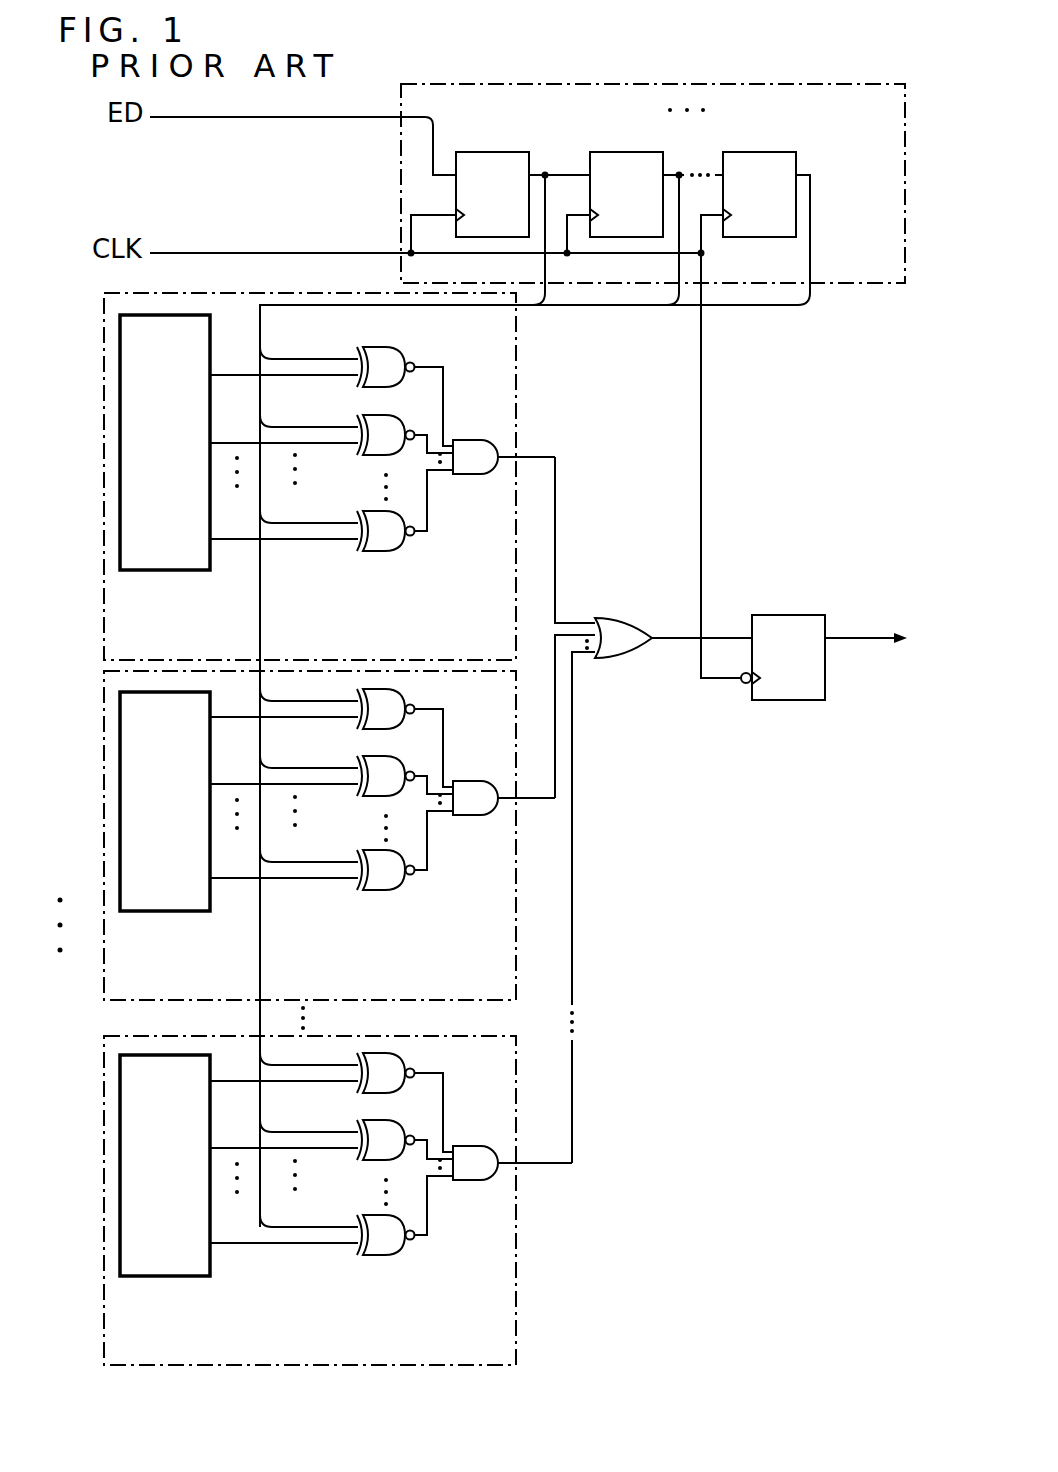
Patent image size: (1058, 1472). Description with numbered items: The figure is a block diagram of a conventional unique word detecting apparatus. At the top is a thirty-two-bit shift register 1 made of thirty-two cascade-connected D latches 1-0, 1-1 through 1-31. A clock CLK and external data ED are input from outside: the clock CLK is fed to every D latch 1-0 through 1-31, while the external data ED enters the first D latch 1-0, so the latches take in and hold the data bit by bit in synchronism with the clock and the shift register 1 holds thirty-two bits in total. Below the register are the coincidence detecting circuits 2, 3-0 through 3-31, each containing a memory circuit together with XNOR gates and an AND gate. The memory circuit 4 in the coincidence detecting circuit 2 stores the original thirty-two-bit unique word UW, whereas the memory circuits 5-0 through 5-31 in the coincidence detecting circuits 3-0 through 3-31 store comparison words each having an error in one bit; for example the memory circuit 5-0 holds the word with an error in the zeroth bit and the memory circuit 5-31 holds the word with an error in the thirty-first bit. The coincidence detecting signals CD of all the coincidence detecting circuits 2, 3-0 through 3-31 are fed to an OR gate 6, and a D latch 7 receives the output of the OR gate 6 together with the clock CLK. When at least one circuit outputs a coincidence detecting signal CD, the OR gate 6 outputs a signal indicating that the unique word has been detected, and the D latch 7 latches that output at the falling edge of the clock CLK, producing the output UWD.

The 32-bit shift register 1 is at (663, 84).
The D latch 1-0 is at (493, 152).
The D latch 1-1 is at (627, 152).
The D latch 1-31 is at (761, 152).
The coincidence detecting circuit 2 is at (103, 380).
The coincidence detecting circuit 3-0 is at (103, 868).
The coincidence detecting circuit 3-31 is at (103, 1125).
The memory circuit 4 is at (210, 548).
The memory circuit 5-0 is at (210, 889).
The memory circuit 5-31 is at (210, 1254).
The OR gate 6 is at (614, 618).
The D latch 7 is at (790, 614).